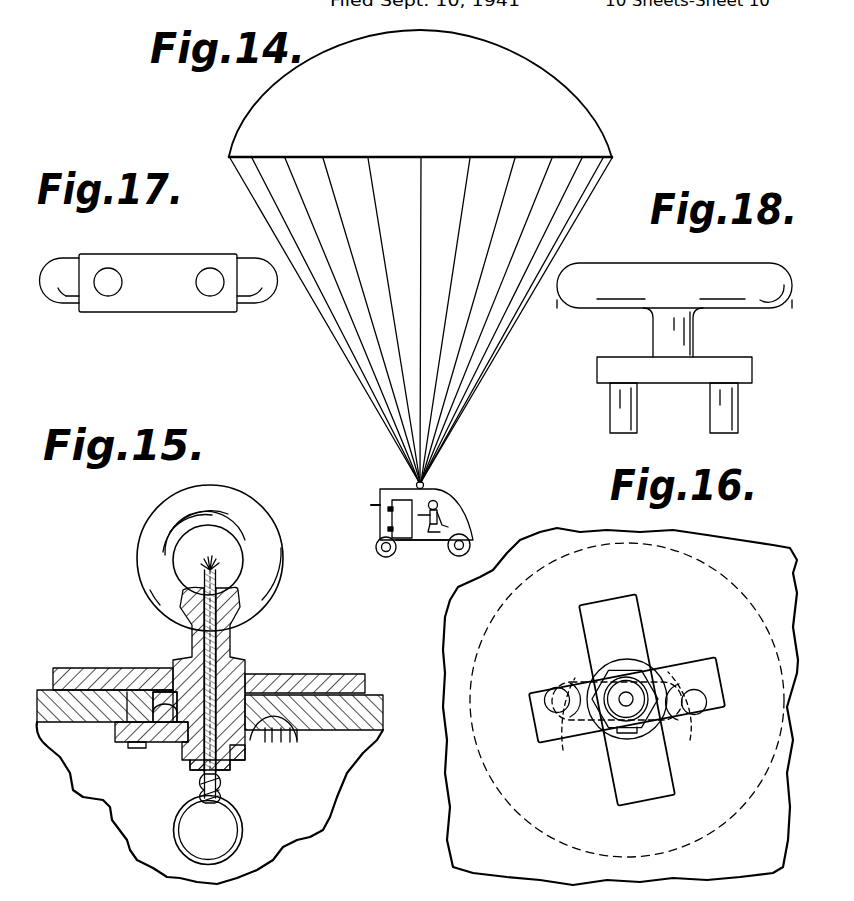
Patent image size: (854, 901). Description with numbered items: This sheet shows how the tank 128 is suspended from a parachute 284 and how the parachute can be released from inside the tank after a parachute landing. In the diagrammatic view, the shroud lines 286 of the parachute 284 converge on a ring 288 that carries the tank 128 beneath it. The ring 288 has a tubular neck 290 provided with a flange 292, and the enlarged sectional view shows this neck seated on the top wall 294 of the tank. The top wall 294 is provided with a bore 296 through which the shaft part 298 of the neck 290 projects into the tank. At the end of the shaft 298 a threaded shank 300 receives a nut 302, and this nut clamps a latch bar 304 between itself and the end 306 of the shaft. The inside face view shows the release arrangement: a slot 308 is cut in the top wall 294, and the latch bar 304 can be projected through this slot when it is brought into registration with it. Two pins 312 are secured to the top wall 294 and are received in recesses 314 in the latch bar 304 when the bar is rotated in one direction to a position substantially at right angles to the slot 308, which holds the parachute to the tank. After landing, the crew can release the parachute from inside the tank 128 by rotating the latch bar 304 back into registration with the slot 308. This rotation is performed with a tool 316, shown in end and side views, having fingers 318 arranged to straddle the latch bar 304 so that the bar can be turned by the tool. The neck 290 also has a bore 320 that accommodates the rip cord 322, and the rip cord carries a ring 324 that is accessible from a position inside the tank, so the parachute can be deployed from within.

In FIG. 14, the tank 128 is at (458, 510).
In FIG. 14, the parachute 284 is at (592, 117).
In FIG. 14, the shroud lines 286 is at (465, 384).
In FIG. 14, the ring 288 is at (422, 483).
In FIG. 15, the ring 288 is at (262, 525).
In FIG. 16, the ring 288 is at (567, 740).
In FIG. 15, the tubular neck 290 is at (230, 632).
In FIG. 15, the flange 292 is at (332, 673).
In FIG. 16, the flange 292 is at (507, 800).
In FIG. 15, the top wall 294 is at (382, 743).
In FIG. 16, the top wall 294 is at (752, 552).
In FIG. 15, the bore 296 is at (163, 747).
In FIG. 16, the bore 296 is at (657, 670).
In FIG. 15, the shaft part 298 is at (297, 740).
In FIG. 16, the shaft part 298 is at (620, 670).
In FIG. 15, the threaded shank 300 is at (223, 772).
In FIG. 16, the threaded shank 300 is at (640, 733).
In FIG. 15, the nut 302 is at (245, 757).
In FIG. 16, the nut 302 is at (613, 740).
In FIG. 15, the latch bar 304 is at (115, 735).
In FIG. 16, the latch bar 304 is at (533, 732).
In FIG. 15, the end of the shaft 306 is at (184, 768).
In FIG. 16, the slot 308 is at (630, 610).
In FIG. 15, the pins 312 is at (137, 745).
In FIG. 16, the pins 312 is at (555, 687).
In FIG. 16, the recesses 314 is at (540, 703).
In FIG. 17, the tool 316 is at (167, 305).
In FIG. 18, the tool 316 is at (758, 352).
In FIG. 17, the fingers 318 is at (214, 275).
In FIG. 18, the fingers 318 is at (610, 417).
In FIG. 15, the bore 320 is at (204, 638).
In FIG. 16, the bore 320 is at (630, 699).
In FIG. 15, the rip cord 322 is at (218, 657).
In FIG. 15, the ring 324 is at (243, 823).